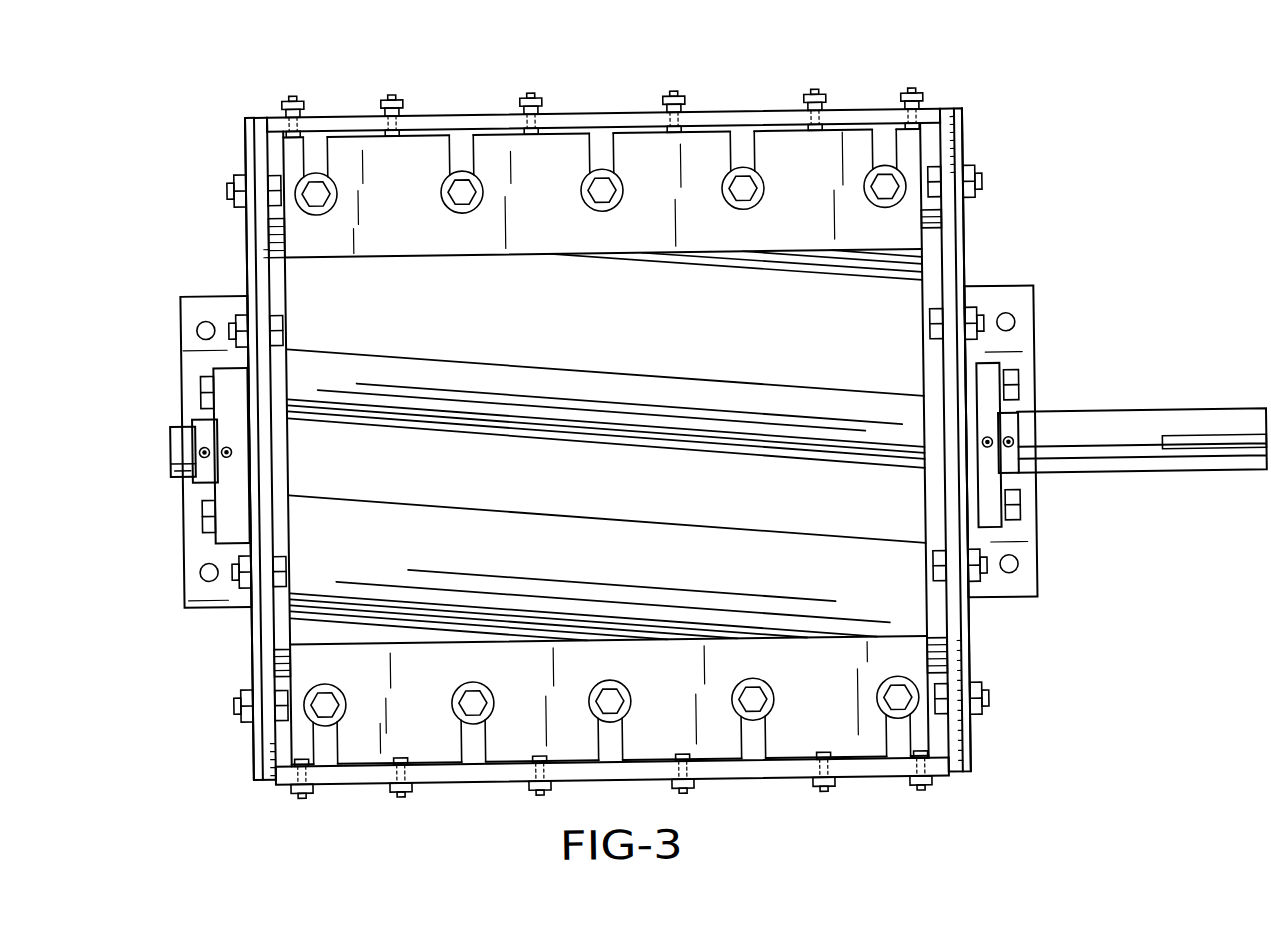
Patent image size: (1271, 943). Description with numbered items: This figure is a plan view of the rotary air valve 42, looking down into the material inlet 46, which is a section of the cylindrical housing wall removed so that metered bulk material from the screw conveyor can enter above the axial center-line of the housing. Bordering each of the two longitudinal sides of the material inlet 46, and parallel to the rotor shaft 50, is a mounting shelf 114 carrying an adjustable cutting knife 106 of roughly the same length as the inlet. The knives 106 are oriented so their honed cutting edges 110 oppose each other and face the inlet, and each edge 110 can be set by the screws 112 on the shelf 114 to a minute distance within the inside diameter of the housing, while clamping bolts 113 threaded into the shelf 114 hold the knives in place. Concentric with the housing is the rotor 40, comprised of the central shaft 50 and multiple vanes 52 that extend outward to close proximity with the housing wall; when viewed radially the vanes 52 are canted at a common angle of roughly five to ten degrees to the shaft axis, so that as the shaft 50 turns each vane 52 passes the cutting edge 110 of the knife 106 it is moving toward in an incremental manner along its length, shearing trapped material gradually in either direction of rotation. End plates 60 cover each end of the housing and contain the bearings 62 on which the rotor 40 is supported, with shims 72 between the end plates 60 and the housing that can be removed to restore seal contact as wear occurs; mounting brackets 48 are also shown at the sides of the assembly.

The rotor 40 is at (306, 485).
The rotary air valve 42 is at (611, 452).
The material inlet 46 is at (273, 638).
The mounting brackets 48 is at (187, 299).
The rotor shaft 50 is at (1176, 436).
The vanes 52 is at (816, 276).
The end plates 60 is at (961, 278).
The bearings 62 is at (209, 533).
The shims 72 is at (257, 120).
The cutting knife 106 is at (413, 149).
The honed cutting edge 110 is at (881, 252).
The screws 112 is at (532, 101).
The clamping bolts 113 is at (597, 183).
The mounting shelf 114 is at (748, 120).